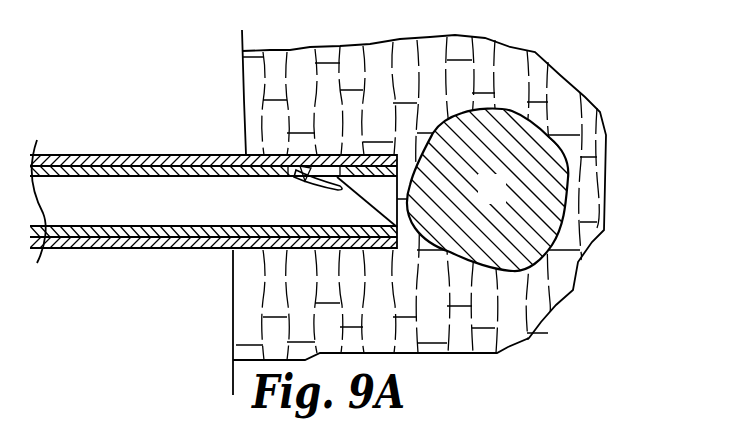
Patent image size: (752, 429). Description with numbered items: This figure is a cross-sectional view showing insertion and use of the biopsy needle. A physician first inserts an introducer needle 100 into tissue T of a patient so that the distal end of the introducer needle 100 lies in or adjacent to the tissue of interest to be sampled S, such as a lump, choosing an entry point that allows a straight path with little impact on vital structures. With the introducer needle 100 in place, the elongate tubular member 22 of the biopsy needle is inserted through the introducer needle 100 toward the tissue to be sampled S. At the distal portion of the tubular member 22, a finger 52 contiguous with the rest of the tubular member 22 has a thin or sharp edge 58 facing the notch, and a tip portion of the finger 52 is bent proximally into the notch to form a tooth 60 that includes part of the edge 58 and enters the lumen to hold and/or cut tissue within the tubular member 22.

The introducer needle 100 is at (80, 153).
The elongate tubular member 22 is at (94, 233).
The finger 52 is at (320, 176).
The edge 58 is at (298, 185).
The tooth 60 is at (287, 168).
The tissue T is at (558, 98).
The tissue to be sampled S is at (502, 202).